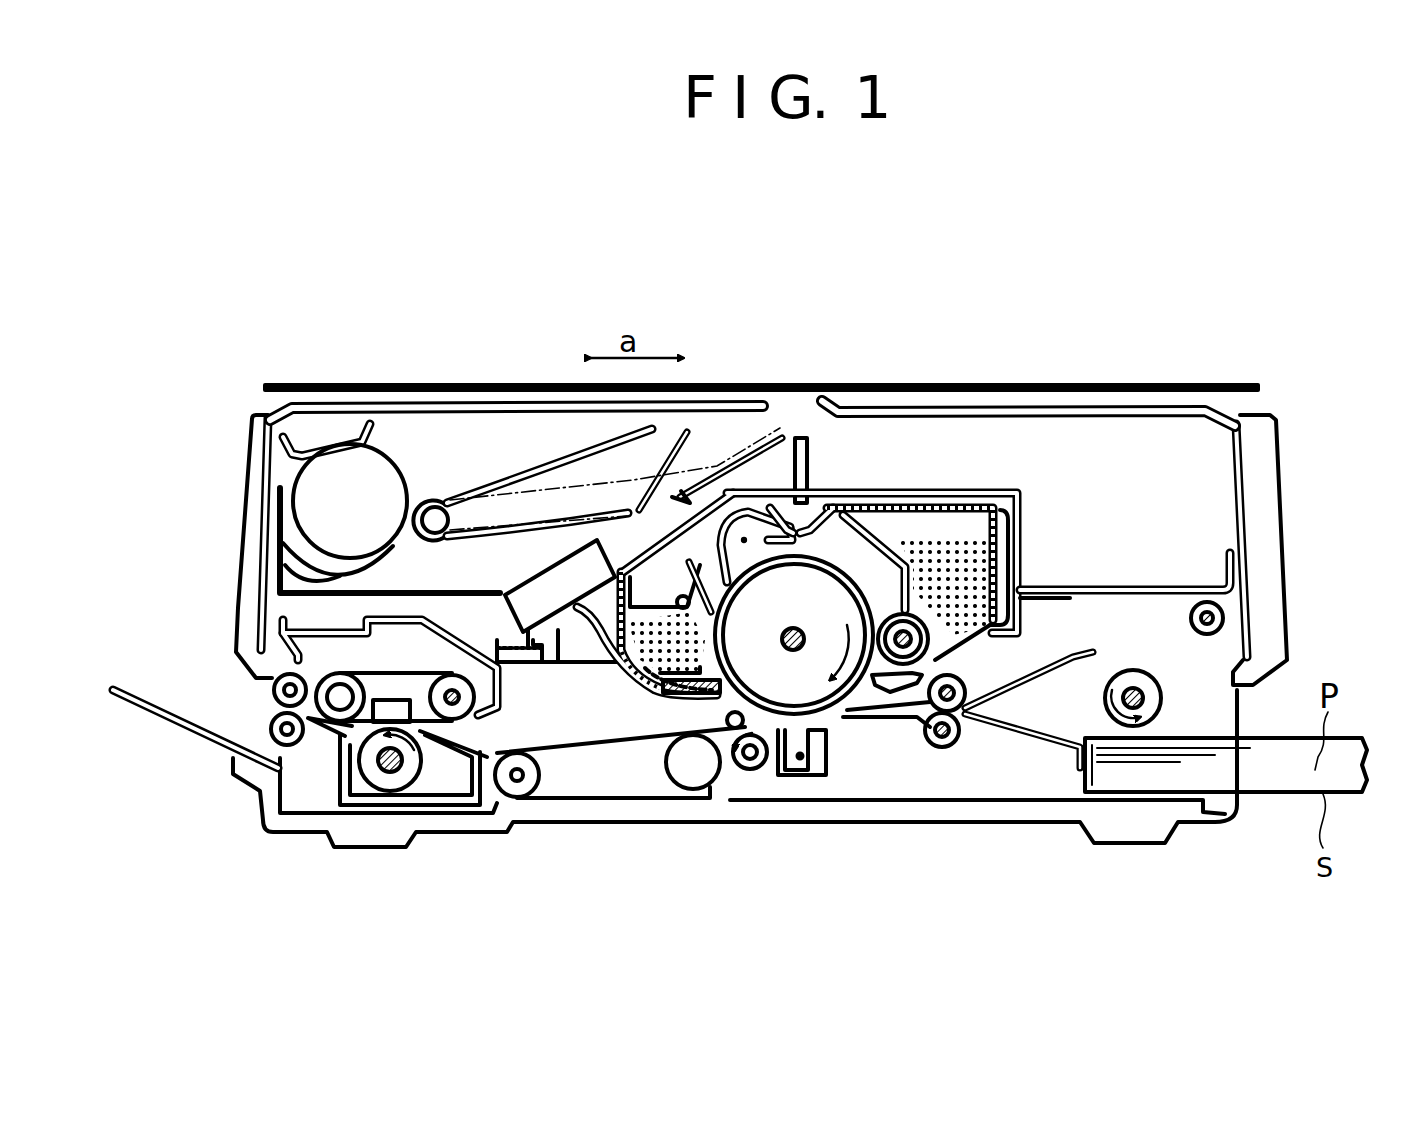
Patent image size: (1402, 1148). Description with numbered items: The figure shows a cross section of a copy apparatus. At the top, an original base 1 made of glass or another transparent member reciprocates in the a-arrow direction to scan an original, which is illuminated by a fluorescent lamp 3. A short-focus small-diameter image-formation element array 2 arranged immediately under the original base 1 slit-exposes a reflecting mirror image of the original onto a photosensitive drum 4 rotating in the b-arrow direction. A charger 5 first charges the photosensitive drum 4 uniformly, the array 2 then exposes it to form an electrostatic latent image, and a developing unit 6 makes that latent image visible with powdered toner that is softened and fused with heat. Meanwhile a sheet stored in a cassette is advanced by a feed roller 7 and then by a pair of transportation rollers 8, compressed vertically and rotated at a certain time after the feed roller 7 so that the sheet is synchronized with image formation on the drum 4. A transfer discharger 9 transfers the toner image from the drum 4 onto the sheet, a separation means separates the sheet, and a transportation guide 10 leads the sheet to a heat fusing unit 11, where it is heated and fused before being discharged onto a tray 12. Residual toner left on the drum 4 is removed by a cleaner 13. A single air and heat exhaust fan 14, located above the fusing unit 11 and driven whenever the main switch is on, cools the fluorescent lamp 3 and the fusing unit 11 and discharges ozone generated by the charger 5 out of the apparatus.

The original base 1 is at (327, 392).
The short-focus small-diameter image-formation element array 2 is at (808, 452).
The fluorescent lamp 3 is at (440, 503).
The photosensitive drum 4 is at (843, 578).
The charger 5 is at (745, 500).
The developing unit 6 is at (985, 500).
The feed roller 7 is at (1166, 690).
The pair of transportation rollers 8 is at (940, 748).
The transfer discharger 9 is at (800, 778).
The transportation guide 10 is at (568, 752).
The heat fusing unit 11 is at (378, 808).
The tray 12 is at (175, 728).
The cleaner 13 is at (683, 648).
The single air and heat exhaust fan 14 is at (327, 497).